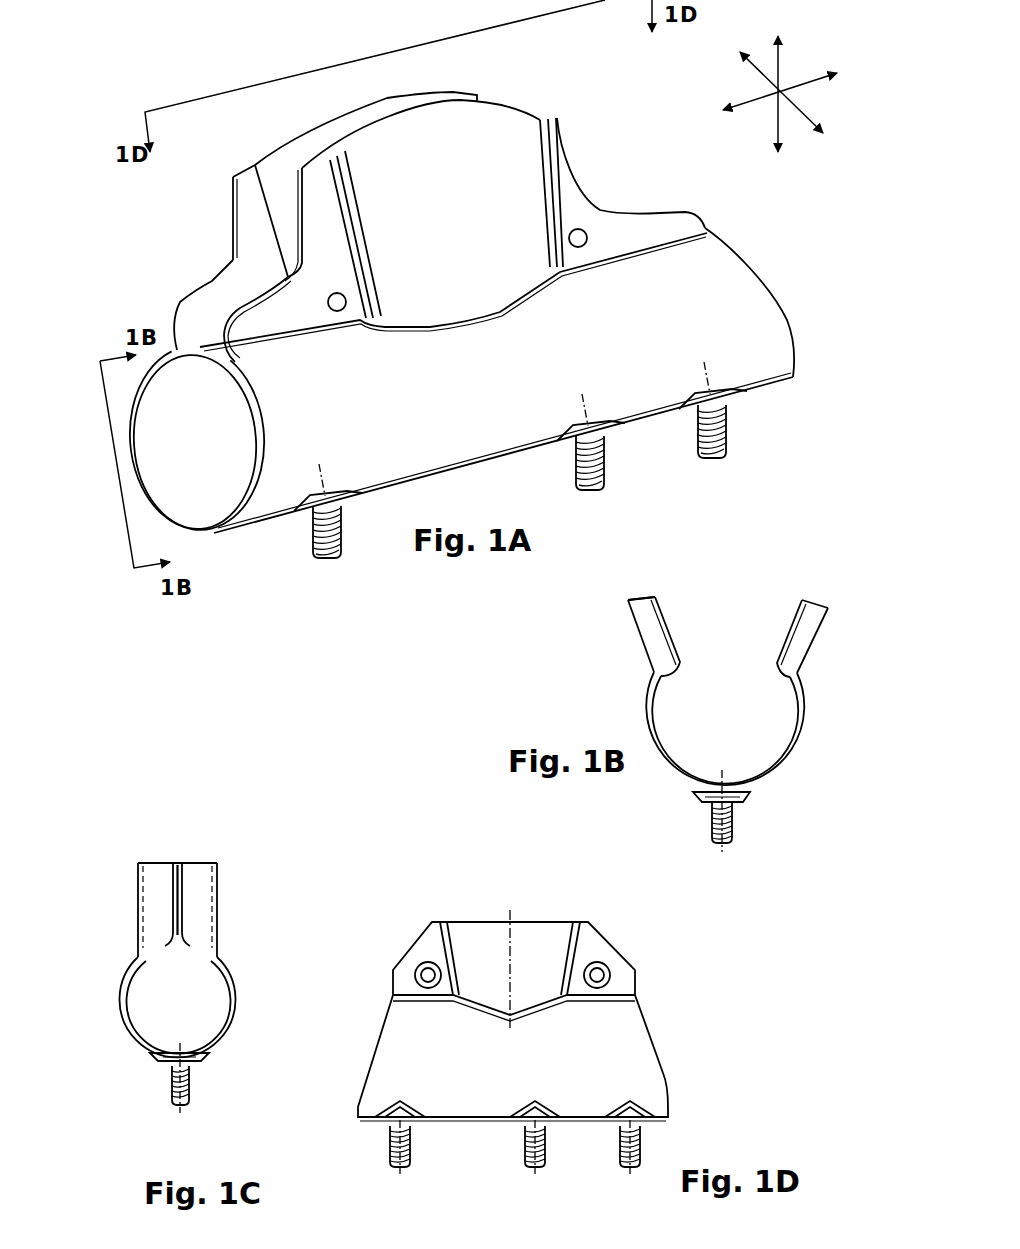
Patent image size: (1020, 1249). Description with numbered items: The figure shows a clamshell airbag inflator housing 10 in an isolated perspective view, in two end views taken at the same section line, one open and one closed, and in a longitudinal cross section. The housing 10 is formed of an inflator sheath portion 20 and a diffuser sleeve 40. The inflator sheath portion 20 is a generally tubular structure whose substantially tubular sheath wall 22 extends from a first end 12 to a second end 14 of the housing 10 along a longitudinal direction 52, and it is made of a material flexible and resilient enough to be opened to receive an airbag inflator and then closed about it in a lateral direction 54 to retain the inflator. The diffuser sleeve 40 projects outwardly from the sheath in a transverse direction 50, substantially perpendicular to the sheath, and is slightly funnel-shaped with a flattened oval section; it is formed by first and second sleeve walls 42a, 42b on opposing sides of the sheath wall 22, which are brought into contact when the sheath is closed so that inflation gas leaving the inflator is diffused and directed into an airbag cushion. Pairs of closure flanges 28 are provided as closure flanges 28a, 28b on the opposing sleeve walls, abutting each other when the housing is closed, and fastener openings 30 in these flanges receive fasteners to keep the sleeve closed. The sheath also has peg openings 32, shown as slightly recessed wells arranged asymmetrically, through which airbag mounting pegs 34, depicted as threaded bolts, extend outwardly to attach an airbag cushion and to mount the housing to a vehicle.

In FIG. 1A, the clamshell airbag inflator housing 10 is at (770, 231).
In FIG. 1B, the clamshell airbag inflator housing 10 is at (818, 685).
In FIG. 1C, the clamshell airbag inflator housing 10 is at (258, 940).
In FIG. 1D, the clamshell airbag inflator housing 10 is at (645, 997).
In FIG. 1A, the first end 12 is at (193, 534).
In FIG. 1A, the second end 14 is at (792, 370).
In FIG. 1A, the inflator sheath portion 20 is at (748, 289).
In FIG. 1B, the inflator sheath portion 20 is at (808, 755).
In FIG. 1C, the inflator sheath portion 20 is at (226, 1048).
In FIG. 1D, the inflator sheath portion 20 is at (666, 1074).
In FIG. 1A, the sheath wall 22 is at (768, 348).
In FIG. 1C, the sheath wall 22 is at (234, 1028).
In FIG. 1D, the sheath wall 22 is at (621, 1046).
In FIG. 1D, the closure flanges 28 is at (437, 958).
In FIG. 1A, the closure flange 28a is at (267, 290).
In FIG. 1A, the closure flange 28b is at (213, 282).
In FIG. 1A, the fastener openings 30 is at (582, 236).
In FIG. 1C, the fastener openings 30 is at (183, 918).
In FIG. 1D, the fastener openings 30 is at (603, 971).
In FIG. 1A, the peg openings 32 is at (735, 403).
In FIG. 1B, the peg openings 32 is at (730, 804).
In FIG. 1C, the peg openings 32 is at (193, 1067).
In FIG. 1D, the peg openings 32 is at (638, 1124).
In FIG. 1A, the airbag mounting pegs 34 is at (610, 465).
In FIG. 1B, the airbag mounting pegs 34 is at (731, 822).
In FIG. 1C, the airbag mounting pegs 34 is at (189, 1090).
In FIG. 1D, the airbag mounting pegs 34 is at (547, 1147).
In FIG. 1A, the diffuser sleeve 40 is at (524, 96).
In FIG. 1B, the diffuser sleeve 40 is at (818, 578).
In FIG. 1C, the diffuser sleeve 40 is at (232, 880).
In FIG. 1D, the diffuser sleeve 40 is at (611, 938).
In FIG. 1A, the first sleeve wall 42a is at (486, 118).
In FIG. 1B, the first sleeve wall 42a is at (803, 605).
In FIG. 1C, the first sleeve wall 42a is at (198, 877).
In FIG. 1A, the second sleeve wall 42b is at (285, 172).
In FIG. 1B, the second sleeve wall 42b is at (658, 602).
In FIG. 1C, the second sleeve wall 42b is at (147, 873).
In FIG. 1D, the second sleeve wall 42b is at (487, 937).
In FIG. 1A, the transverse direction 50 is at (778, 110).
In FIG. 1A, the longitudinal direction 52 is at (798, 84).
In FIG. 1A, the lateral direction 54 is at (800, 98).